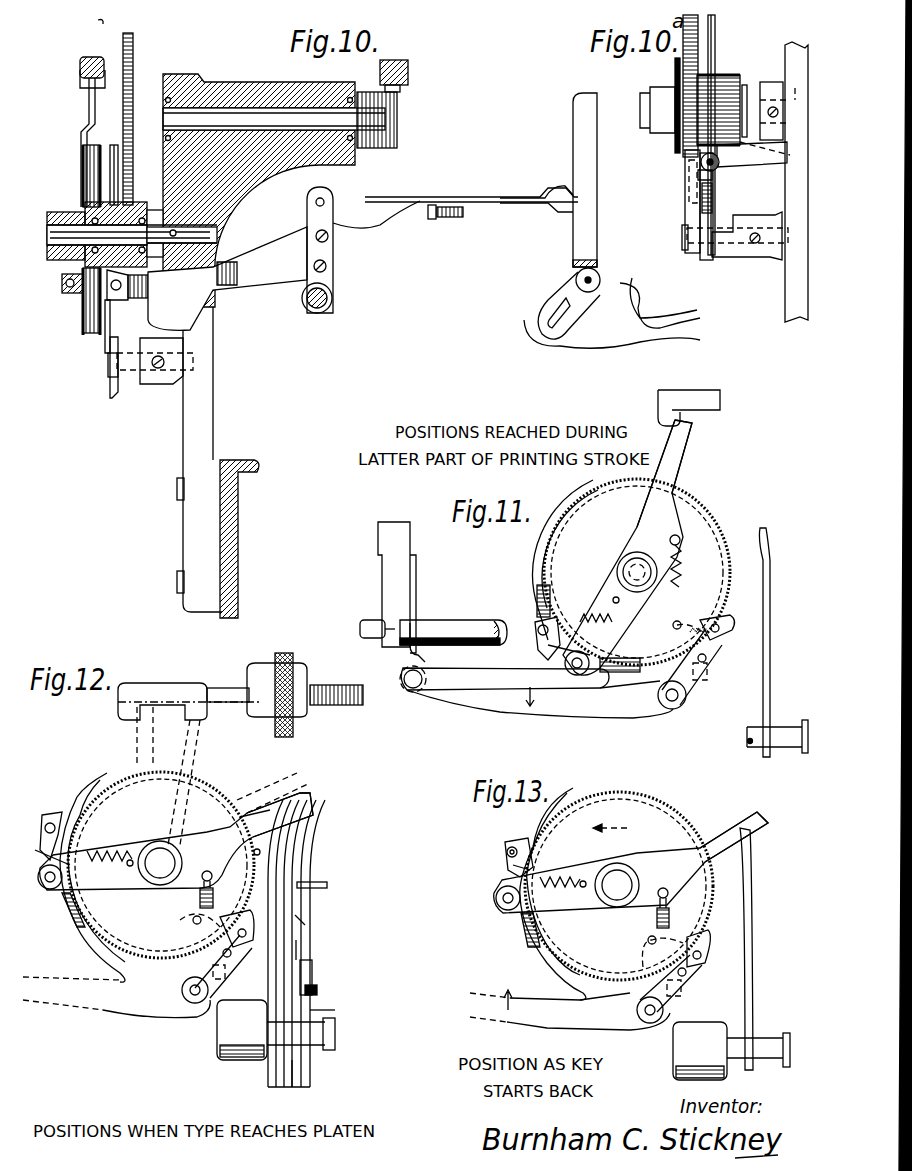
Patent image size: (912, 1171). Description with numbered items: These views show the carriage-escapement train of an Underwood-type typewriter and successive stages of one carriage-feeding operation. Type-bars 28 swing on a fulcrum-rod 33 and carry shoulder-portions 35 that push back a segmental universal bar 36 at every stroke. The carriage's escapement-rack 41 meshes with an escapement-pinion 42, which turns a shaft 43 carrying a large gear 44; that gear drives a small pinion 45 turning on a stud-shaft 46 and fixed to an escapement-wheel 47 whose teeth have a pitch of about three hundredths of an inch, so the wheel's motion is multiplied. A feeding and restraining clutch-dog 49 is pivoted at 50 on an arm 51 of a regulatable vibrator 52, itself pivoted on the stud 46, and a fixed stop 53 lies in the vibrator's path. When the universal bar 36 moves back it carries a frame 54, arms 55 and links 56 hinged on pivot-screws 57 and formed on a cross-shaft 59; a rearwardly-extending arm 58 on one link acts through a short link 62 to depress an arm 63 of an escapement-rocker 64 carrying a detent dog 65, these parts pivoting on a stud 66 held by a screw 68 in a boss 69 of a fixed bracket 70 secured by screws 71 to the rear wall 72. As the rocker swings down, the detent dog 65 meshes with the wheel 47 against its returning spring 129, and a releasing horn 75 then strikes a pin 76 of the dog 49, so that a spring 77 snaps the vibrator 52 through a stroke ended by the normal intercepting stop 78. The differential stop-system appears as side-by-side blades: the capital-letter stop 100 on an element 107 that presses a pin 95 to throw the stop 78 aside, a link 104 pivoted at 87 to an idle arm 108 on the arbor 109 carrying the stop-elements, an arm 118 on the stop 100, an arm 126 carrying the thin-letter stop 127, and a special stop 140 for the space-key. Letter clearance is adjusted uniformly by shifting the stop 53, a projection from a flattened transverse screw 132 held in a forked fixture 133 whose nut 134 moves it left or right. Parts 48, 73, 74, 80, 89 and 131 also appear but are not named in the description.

In FIG. 10, the type-bars 28 is at (618, 346).
In FIG. 10, the fulcrum-rod 33 is at (576, 280).
In FIG. 10, the shoulder-portions 35 is at (598, 291).
In FIG. 10, the segmental universal bar 36 is at (573, 153).
In FIG. 10, the escapement-rack 41 is at (408, 76).
In FIG. 10, the escapement-pinion 42 is at (397, 128).
In FIG. 10, the shaft 43 is at (290, 80).
In FIG. 10, the gear 44 is at (133, 48).
In FIG. 10, the pinion 45 is at (135, 202).
In FIG. 10A, the pinion 45 is at (740, 80).
In FIG. 10, the stud-shaft 46 is at (217, 233).
In FIG. 11, the stud-shaft 46 is at (645, 553).
In FIG. 12, the stud-shaft 46 is at (160, 863).
In FIG. 13, the stud-shaft 46 is at (617, 885).
In FIG. 10, the escapement-wheel 47 is at (83, 168).
In FIG. 10A, the escapement-wheel 47 is at (698, 40).
In FIG. 11, the escapement-wheel 47 is at (637, 572).
In FIG. 12, the escapement-wheel 47 is at (161, 865).
In FIG. 13, the escapement-wheel 47 is at (619, 886).
In FIG. 10A, the bracket plate 48 is at (785, 103).
In FIG. 10, the clutch-dog 49 is at (103, 340).
In FIG. 11, the clutch-dog 49 is at (555, 650).
In FIG. 12, the clutch-dog 49 is at (50, 853).
In FIG. 13, the clutch-dog 49 is at (505, 871).
In FIG. 11, the pivot 50 is at (572, 669).
In FIG. 12, the pivot 50 is at (46, 890).
In FIG. 13, the pivot 50 is at (503, 908).
In FIG. 10, the arm 51 is at (83, 314).
In FIG. 10A, the arm 51 is at (676, 140).
In FIG. 11, the arm 51 is at (600, 600).
In FIG. 12, the arm 51 is at (108, 890).
In FIG. 13, the arm 51 is at (575, 912).
In FIG. 10, the regulatable vibrator 52 is at (89, 117).
In FIG. 11, the regulatable vibrator 52 is at (680, 468).
In FIG. 12, the regulatable vibrator 52 is at (196, 745).
In FIG. 13, the regulatable vibrator 52 is at (726, 830).
In FIG. 10, the fixed stop 53 is at (80, 83).
In FIG. 11, the fixed stop 53 is at (658, 421).
In FIG. 12, the fixed stop 53 is at (185, 700).
In FIG. 10, the frame 54 is at (430, 193).
In FIG. 10, the arms 55 is at (376, 226).
In FIG. 10, the links 56 is at (307, 212).
In FIG. 11, the links 56 is at (410, 550).
In FIG. 10, the pivot-screws 57 is at (332, 302).
In FIG. 11, the pivot-screws 57 is at (376, 640).
In FIG. 10, the rearwardly-extending arm 58 is at (227, 278).
In FIG. 10A, the rearwardly-extending arm 58 is at (753, 154).
In FIG. 11, the rearwardly-extending arm 58 is at (417, 606).
In FIG. 11, the cross-shaft 59 is at (453, 632).
In FIG. 10, the short link 62 is at (125, 303).
In FIG. 10A, the short link 62 is at (719, 163).
In FIG. 11, the short link 62 is at (425, 661).
In FIG. 11, the arm 63 is at (504, 686).
In FIG. 12, the arm 63 is at (66, 986).
In FIG. 13, the arm 63 is at (535, 1029).
In FIG. 10, the escapement-rocker 64 is at (113, 395).
In FIG. 10A, the escapement-rocker 64 is at (710, 260).
In FIG. 11, the escapement-rocker 64 is at (540, 699).
In FIG. 12, the escapement-rocker 64 is at (155, 1018).
In FIG. 13, the escapement-rocker 64 is at (588, 1011).
In FIG. 10A, the detent-dog 65 is at (685, 206).
In FIG. 11, the detent-dog 65 is at (733, 633).
In FIG. 12, the detent-dog 65 is at (241, 946).
In FIG. 13, the detent-dog 65 is at (715, 926).
In FIG. 10, the stud 66 is at (108, 372).
In FIG. 10A, the stud 66 is at (683, 245).
In FIG. 11, the stud 66 is at (675, 711).
In FIG. 12, the stud 66 is at (182, 990).
In FIG. 13, the stud 66 is at (643, 1000).
In FIG. 10, the screw 68 is at (156, 368).
In FIG. 10A, the screw 68 is at (755, 245).
In FIG. 10, the boss 69 is at (172, 384).
In FIG. 10A, the boss 69 is at (770, 215).
In FIG. 10, the fixed bracket 70 is at (243, 76).
In FIG. 10A, the fixed bracket 70 is at (796, 182).
In FIG. 12, the fixed bracket 70 is at (227, 1072).
In FIG. 13, the fixed bracket 70 is at (668, 1059).
In FIG. 10, the screws 71 is at (177, 490).
In FIG. 10, the rear wall 72 is at (238, 531).
In FIG. 11, the link 73 is at (700, 680).
In FIG. 12, the link 73 is at (218, 979).
In FIG. 13, the link 73 is at (677, 997).
In FIG. 10A, the link 74 is at (713, 196).
In FIG. 11, the link 74 is at (715, 661).
In FIG. 12, the link 74 is at (230, 971).
In FIG. 13, the link 74 is at (690, 972).
In FIG. 10, the releasing horn 75 is at (113, 145).
In FIG. 10A, the releasing horn 75 is at (716, 28).
In FIG. 11, the releasing horn 75 is at (540, 596).
In FIG. 12, the releasing horn 75 is at (95, 791).
In FIG. 13, the releasing horn 75 is at (540, 966).
In FIG. 10, the pin 76 is at (138, 294).
In FIG. 11, the pin 76 is at (535, 641).
In FIG. 12, the pin 76 is at (43, 823).
In FIG. 13, the pin 76 is at (510, 846).
In FIG. 11, the spring 77 is at (681, 573).
In FIG. 12, the spring 77 is at (214, 896).
In FIG. 13, the spring 77 is at (670, 912).
In FIG. 11, the intercepting stop 78 is at (775, 537).
In FIG. 12, the intercepting stop 78 is at (305, 866).
In FIG. 13, the intercepting stop 78 is at (752, 862).
In FIG. 12, the lever position 80 is at (275, 792).
In FIG. 12, the pivot 87 is at (315, 971).
In FIG. 10, the spring 89 is at (62, 285).
In FIG. 11, the spring 89 is at (599, 618).
In FIG. 12, the spring 89 is at (106, 852).
In FIG. 13, the spring 89 is at (556, 876).
In FIG. 12, the pin 95 is at (312, 890).
In FIG. 12, the capital-letter stop 100 is at (300, 920).
In FIG. 12, the link 104 is at (318, 989).
In FIG. 12, the stop-carrying element 107 is at (300, 951).
In FIG. 12, the idle arm 108 is at (336, 1011).
In FIG. 11, the arbor 109 is at (790, 727).
In FIG. 12, the arbor 109 is at (335, 1036).
In FIG. 13, the arbor 109 is at (773, 1038).
In FIG. 12, the arm 118 is at (298, 1073).
In FIG. 12, the arm 126 is at (289, 1099).
In FIG. 12, the stop 127 is at (255, 856).
In FIG. 10A, the spring 129 is at (698, 173).
In FIG. 11, the spring 129 is at (700, 625).
In FIG. 12, the spring 129 is at (194, 917).
In FIG. 13, the spring 129 is at (652, 936).
In FIG. 10, the spring 131 is at (456, 218).
In FIG. 10, the transverse screw 132 is at (98, 25).
In FIG. 11, the transverse screw 132 is at (720, 412).
In FIG. 12, the transverse screw 132 is at (240, 670).
In FIG. 12, the forked fixture 133 is at (307, 680).
In FIG. 12, the nut 134 is at (293, 727).
In FIG. 12, the special stop 140 is at (243, 828).